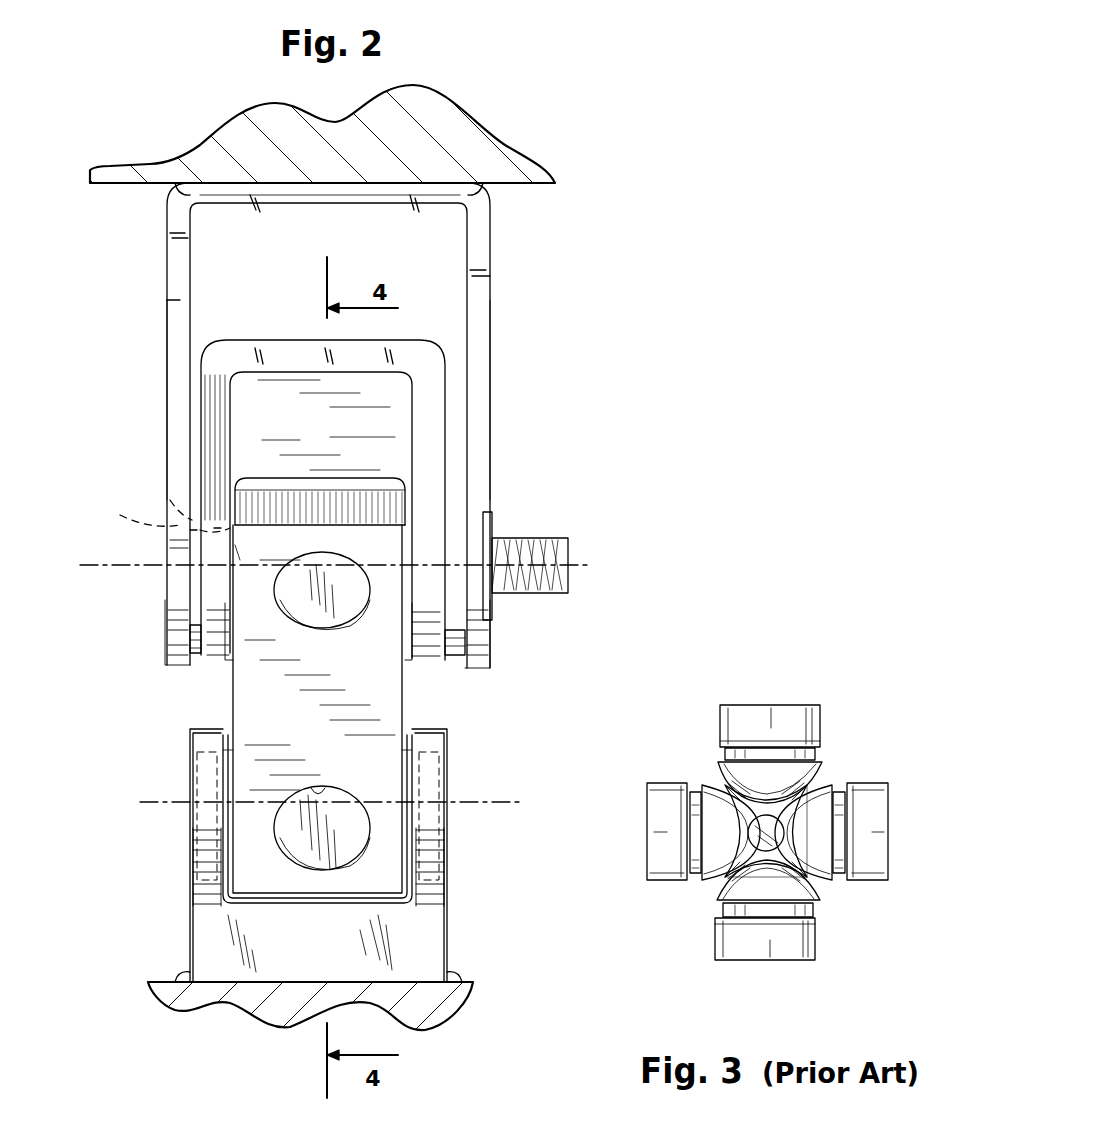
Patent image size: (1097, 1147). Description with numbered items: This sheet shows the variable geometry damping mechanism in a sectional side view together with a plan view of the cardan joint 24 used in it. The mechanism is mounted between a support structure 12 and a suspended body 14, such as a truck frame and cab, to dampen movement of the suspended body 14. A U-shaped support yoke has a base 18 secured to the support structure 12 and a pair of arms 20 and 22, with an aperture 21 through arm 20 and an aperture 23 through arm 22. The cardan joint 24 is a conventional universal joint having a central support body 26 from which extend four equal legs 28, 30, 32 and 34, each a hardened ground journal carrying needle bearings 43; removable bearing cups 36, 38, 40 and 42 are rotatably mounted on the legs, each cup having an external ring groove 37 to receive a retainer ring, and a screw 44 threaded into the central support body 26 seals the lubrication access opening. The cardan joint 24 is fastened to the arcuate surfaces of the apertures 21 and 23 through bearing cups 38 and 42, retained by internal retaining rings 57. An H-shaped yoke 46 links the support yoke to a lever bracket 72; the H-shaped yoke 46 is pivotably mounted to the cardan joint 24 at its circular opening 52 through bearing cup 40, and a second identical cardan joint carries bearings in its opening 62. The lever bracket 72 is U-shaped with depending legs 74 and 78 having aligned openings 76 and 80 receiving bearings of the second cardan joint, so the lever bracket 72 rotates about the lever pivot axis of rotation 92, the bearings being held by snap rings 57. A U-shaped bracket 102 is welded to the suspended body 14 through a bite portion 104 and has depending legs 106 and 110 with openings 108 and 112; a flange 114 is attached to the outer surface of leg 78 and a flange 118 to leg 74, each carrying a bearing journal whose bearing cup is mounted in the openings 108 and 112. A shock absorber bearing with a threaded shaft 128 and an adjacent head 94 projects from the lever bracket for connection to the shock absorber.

In FIG. 2, the support structure 12 is at (455, 1005).
In FIG. 2, the suspended body 14 is at (520, 166).
In FIG. 2, the base 18 is at (340, 905).
In FIG. 2, the arm 20 is at (447, 870).
In FIG. 2, the aperture 21 is at (442, 775).
In FIG. 2, the arm 22 is at (195, 892).
In FIG. 2, the aperture 23 is at (195, 770).
In FIG. 3, the cardan joint 24 is at (758, 828).
In FIG. 3, the central support body 26 is at (778, 823).
In FIG. 3, the leg 28 is at (812, 860).
In FIG. 3, the leg 30 is at (780, 875).
In FIG. 3, the leg 32 is at (728, 800).
In FIG. 3, the leg 34 is at (770, 790).
In FIG. 3, the bearing cup 36 is at (870, 825).
In FIG. 3, the external ring groove 37 is at (818, 752).
In FIG. 2, the bearing cup 38 is at (445, 800).
In FIG. 3, the bearing cup 38 is at (772, 945).
In FIG. 2, the bearing cup 40 is at (340, 810).
In FIG. 3, the bearing cup 40 is at (650, 848).
In FIG. 2, the bearing cup 42 is at (190, 790).
In FIG. 3, the bearing cup 42 is at (740, 705).
In FIG. 3, the needle bearings 43 is at (760, 752).
In FIG. 3, the screw 44 is at (755, 845).
In FIG. 2, the H-shaped yoke 46 is at (228, 698).
In FIG. 2, the circular opening 52 is at (318, 790).
In FIG. 2, the snap ring 57 is at (226, 735).
In FIG. 2, the circular opening 62 is at (332, 565).
In FIG. 2, the lever bracket 72 is at (242, 338).
In FIG. 2, the leg 74 is at (203, 416).
In FIG. 2, the opening 76 is at (158, 515).
In FIG. 2, the leg 78 is at (430, 406).
In FIG. 2, the opening 80 is at (420, 545).
In FIG. 2, the lever pivot axis of rotation 92 is at (255, 568).
In FIG. 2, the bolt head 94 is at (492, 585).
In FIG. 2, the U-shaped bracket 102 is at (496, 246).
In FIG. 2, the bite portion 104 is at (368, 195).
In FIG. 2, the leg 106 is at (490, 303).
In FIG. 2, the opening 108 is at (490, 618).
In FIG. 2, the leg 110 is at (167, 283).
In FIG. 2, the opening 112 is at (180, 530).
In FIG. 2, the flange 114 is at (452, 660).
In FIG. 2, the flange 118 is at (192, 650).
In FIG. 2, the threaded shaft 128 is at (545, 545).